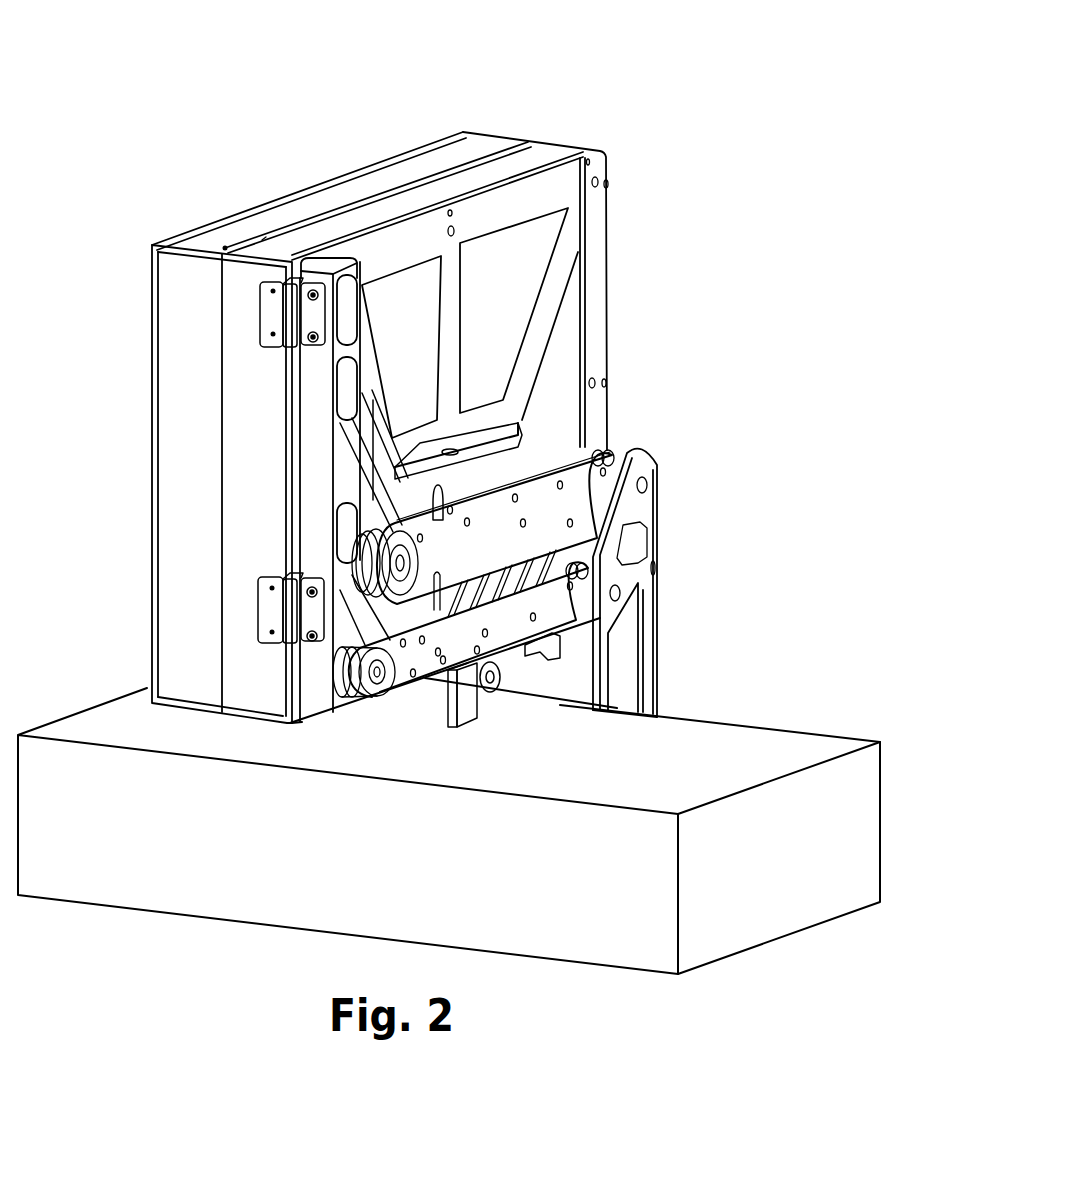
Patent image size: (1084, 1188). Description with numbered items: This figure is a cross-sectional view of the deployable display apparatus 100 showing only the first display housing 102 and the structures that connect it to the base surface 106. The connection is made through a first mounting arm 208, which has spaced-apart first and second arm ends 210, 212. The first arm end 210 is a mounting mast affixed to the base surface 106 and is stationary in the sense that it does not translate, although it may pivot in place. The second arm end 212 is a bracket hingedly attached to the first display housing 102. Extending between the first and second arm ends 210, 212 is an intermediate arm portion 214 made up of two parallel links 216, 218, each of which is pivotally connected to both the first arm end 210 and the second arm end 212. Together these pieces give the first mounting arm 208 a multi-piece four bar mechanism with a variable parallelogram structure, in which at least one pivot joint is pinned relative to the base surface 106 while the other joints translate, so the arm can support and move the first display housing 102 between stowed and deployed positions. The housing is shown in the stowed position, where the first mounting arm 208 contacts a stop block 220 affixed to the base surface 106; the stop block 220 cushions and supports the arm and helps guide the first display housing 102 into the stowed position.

The deployable display apparatus 100 is at (431, 393).
The first display housing 102 is at (203, 242).
The base surface 106 is at (772, 752).
The first mounting arm 208 is at (585, 372).
The first arm end 210 is at (670, 512).
The second arm end 212 is at (290, 473).
The intermediate arm portion 214 is at (398, 500).
The parallel link 216 is at (550, 470).
The parallel link 218 is at (493, 637).
The stop block 220 is at (473, 682).